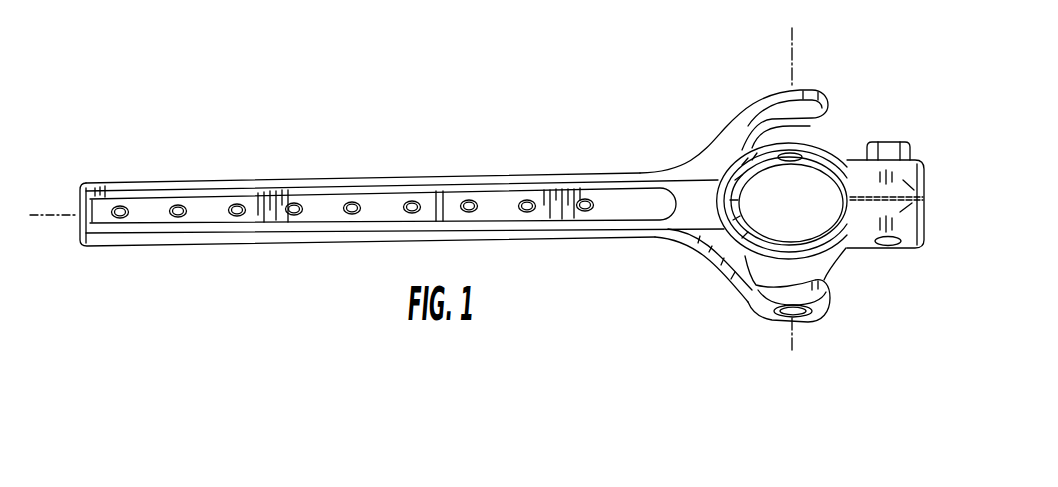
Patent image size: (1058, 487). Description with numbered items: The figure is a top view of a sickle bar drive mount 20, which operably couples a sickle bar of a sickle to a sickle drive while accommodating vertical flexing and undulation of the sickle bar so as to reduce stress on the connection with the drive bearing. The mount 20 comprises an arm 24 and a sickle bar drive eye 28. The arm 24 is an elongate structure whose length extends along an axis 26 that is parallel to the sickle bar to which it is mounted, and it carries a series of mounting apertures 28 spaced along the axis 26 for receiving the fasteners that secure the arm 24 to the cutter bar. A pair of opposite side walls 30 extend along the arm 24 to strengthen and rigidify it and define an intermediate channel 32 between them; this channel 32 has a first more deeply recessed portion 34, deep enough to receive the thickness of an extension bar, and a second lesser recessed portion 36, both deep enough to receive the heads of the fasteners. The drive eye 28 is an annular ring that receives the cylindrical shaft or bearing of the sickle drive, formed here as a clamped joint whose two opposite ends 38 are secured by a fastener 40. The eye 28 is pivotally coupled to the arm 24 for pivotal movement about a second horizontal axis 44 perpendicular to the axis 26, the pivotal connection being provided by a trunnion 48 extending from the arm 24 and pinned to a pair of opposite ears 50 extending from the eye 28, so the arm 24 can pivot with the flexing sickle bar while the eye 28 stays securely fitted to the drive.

The sickle bar drive mount 20 is at (303, 56).
The arm 24 is at (302, 176).
The axis 26 is at (48, 210).
The mounting apertures / sickle bar drive eye 28 is at (119, 205).
The side walls 30 is at (237, 178).
The channel 32 is at (347, 183).
The more deeply recessed portion 34 is at (320, 207).
The lesser recessed portion 36 is at (547, 188).
The opposite ends 38 is at (930, 180).
The fastener 40 is at (887, 145).
The second horizontal axis 44 is at (788, 62).
The trunnion 48 is at (728, 107).
The ears 50 is at (817, 127).